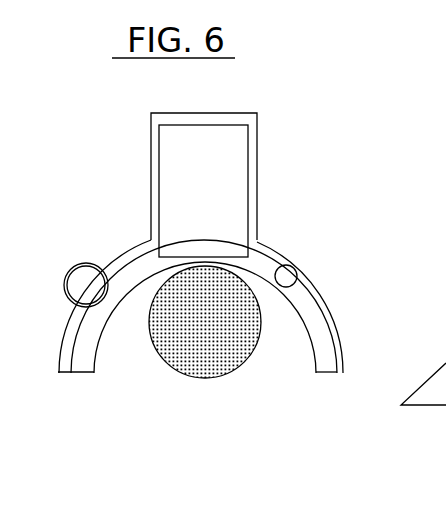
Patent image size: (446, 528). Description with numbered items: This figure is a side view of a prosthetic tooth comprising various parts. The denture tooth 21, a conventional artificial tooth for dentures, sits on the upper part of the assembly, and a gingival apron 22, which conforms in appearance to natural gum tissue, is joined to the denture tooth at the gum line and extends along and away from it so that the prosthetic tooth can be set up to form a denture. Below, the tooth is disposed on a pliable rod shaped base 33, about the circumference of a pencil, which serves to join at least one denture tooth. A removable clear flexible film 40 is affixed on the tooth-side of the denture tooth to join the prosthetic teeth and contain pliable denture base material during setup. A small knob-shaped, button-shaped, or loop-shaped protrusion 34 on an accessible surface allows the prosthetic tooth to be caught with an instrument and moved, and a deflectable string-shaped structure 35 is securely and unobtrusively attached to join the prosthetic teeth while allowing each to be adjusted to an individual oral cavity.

The denture tooth 21 is at (172, 166).
The gingival apron 22 is at (83, 345).
The rod shaped base 33 is at (217, 338).
The protrusion 34 is at (80, 263).
The deflectable string-shaped structure 35 is at (283, 278).
The removable clear flexible film 40 is at (260, 117).